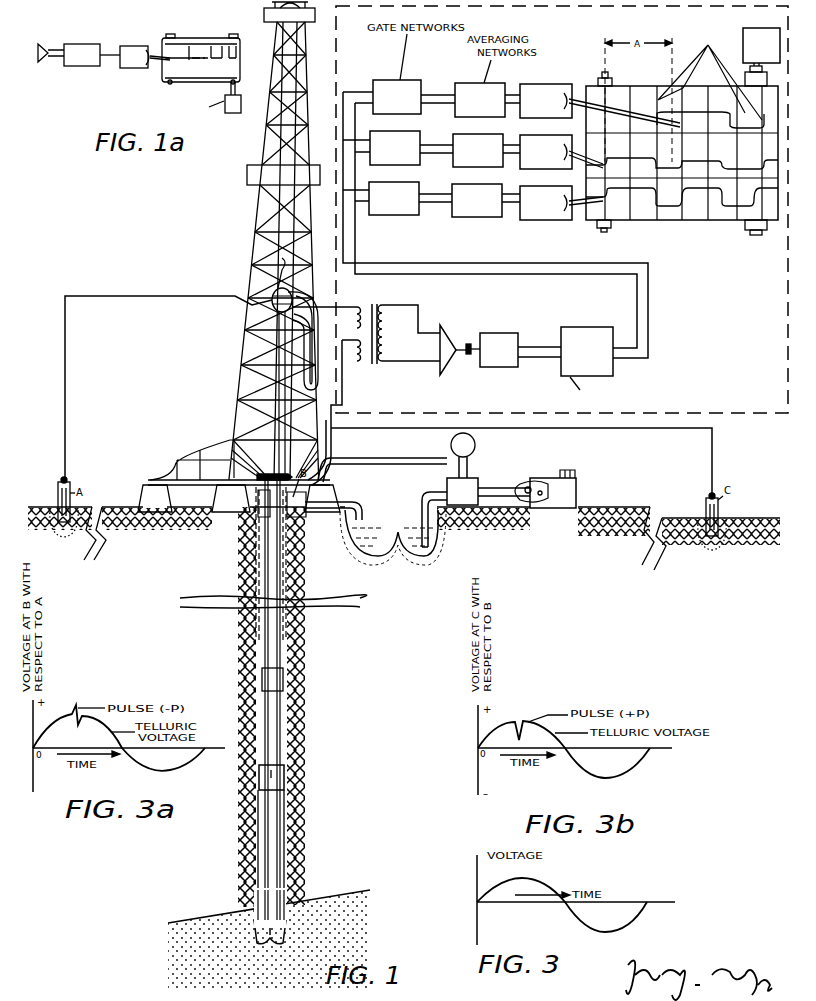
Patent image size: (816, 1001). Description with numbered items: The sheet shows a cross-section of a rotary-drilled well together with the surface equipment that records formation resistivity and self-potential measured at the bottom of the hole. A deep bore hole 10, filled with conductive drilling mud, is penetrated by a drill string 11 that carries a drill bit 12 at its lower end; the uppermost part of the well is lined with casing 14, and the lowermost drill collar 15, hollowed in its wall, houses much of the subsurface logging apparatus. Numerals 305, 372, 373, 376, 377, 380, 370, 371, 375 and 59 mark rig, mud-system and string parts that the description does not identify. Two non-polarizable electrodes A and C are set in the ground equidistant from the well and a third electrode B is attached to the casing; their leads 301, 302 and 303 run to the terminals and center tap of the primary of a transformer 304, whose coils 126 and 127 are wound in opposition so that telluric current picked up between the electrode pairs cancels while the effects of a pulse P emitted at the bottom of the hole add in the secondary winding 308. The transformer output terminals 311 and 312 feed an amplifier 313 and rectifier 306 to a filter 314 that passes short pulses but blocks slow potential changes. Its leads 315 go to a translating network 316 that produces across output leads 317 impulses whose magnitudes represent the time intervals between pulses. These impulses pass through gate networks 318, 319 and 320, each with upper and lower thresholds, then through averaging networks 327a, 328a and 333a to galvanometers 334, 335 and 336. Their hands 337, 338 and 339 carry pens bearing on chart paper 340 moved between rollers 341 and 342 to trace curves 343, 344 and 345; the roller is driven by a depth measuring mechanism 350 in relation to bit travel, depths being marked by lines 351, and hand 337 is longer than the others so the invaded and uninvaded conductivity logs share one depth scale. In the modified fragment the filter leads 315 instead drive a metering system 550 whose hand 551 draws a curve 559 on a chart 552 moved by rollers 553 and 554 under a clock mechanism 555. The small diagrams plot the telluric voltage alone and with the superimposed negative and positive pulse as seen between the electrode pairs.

In FIG. 1A, the amplifier 313 is at (51, 46).
In FIG. 1, the amplifier 313 is at (452, 345).
In FIG. 1A, the filter 314 is at (82, 48).
In FIG. 1, the filter 314 is at (503, 333).
In FIG. 1A, the leads 315 is at (104, 56).
In FIG. 1, the leads 315 is at (537, 357).
In FIG. 1A, the metering system 550 is at (134, 57).
In FIG. 1A, the hand 551 is at (158, 60).
In FIG. 1A, the chart 552 is at (213, 78).
In FIG. 1A, the roller 553 is at (172, 34).
In FIG. 1A, the roller 554 is at (234, 34).
In FIG. 1A, the clock mechanism 555 is at (227, 110).
In FIG. 1A, the curve 559 is at (190, 62).
In FIG. 1, the translating and recording apparatus enclosure 305 is at (524, 412).
In FIG. 1, the gate network 318 is at (397, 97).
In FIG. 1, the gate network 319 is at (395, 148).
In FIG. 1, the gate network 320 is at (394, 198).
In FIG. 1, the averaging network 327a is at (480, 100).
In FIG. 1, the averaging network 328a is at (478, 150).
In FIG. 1, the averaging network 333a is at (477, 200).
In FIG. 1, the galvanometer 334 is at (600, 105).
In FIG. 1, the galvanometer 335 is at (561, 152).
In FIG. 1, the galvanometer 336 is at (561, 203).
In FIG. 1, the hand 337 is at (644, 114).
In FIG. 1, the hand 338 is at (602, 160).
In FIG. 1, the hand 339 is at (600, 200).
In FIG. 1, the chart paper 340 is at (686, 212).
In FIG. 1, the roller 341 is at (608, 232).
In FIG. 1, the roller 342 is at (757, 237).
In FIG. 1, the curve 343 is at (693, 111).
In FIG. 1, the curve 344 is at (690, 158).
In FIG. 1, the curve 345 is at (690, 182).
In FIG. 1, the depth measuring mechanism 350 is at (761, 47).
In FIG. 1, the lines 351 is at (710, 74).
In FIG. 1, the coil 126 is at (358, 307).
In FIG. 1, the coil 127 is at (360, 362).
In FIG. 1, the transformer 304 is at (375, 304).
In FIG. 1, the secondary winding 308 is at (390, 306).
In FIG. 1, the output terminal 311 is at (388, 362).
In FIG. 1, the output terminal 312 is at (443, 330).
In FIG. 1, the rectifier 306 is at (469, 343).
In FIG. 1, the translating network 316 is at (578, 340).
In FIG. 1, the output leads 317 is at (648, 322).
In FIG. 1, the lead 301 is at (180, 296).
In FIG. 1, the lead 302 is at (584, 428).
In FIG. 1, the lead 303 is at (336, 450).
In FIG. 1, the derrick 372 is at (240, 410).
In FIG. 1, the swivel 373 is at (270, 327).
In FIG. 1, the mud hose 377 is at (262, 371).
In FIG. 1, the mud pump discharge line 376 is at (432, 458).
In FIG. 1, the mud suction pipe 380 is at (419, 522).
In FIG. 1, the mud return line 370 is at (386, 504).
In FIG. 1, the mud pit 371 is at (368, 556).
In FIG. 1, the mud pump 375 is at (478, 525).
In FIG. 1, the casing 14 is at (240, 535).
In FIG. 1, the bore hole 10 is at (301, 706).
In FIG. 1, the drill string 11 is at (280, 658).
In FIG. 1, the tool joint / sub 59 is at (285, 777).
In FIG. 1, the drill collar 15 is at (284, 830).
In FIG. 1, the drill bit 12 is at (287, 936).